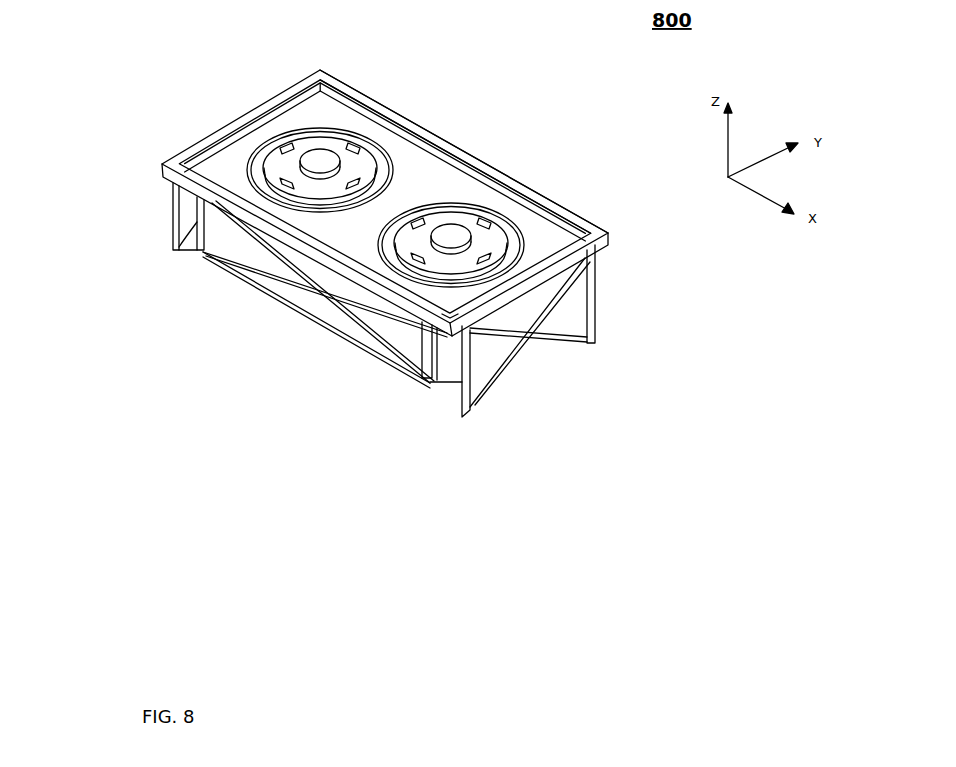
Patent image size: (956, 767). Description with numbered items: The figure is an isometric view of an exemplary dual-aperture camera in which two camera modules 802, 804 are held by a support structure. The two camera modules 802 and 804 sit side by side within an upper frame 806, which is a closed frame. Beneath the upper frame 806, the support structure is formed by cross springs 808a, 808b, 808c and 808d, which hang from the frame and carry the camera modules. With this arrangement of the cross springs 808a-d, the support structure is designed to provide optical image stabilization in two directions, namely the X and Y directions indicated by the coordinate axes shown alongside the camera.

The camera module 802 is at (377, 132).
The camera module 804 is at (503, 213).
The upper frame 806 is at (607, 238).
The cross spring 808a is at (325, 297).
The cross spring 808b is at (450, 156).
The cross spring 808c is at (528, 343).
The cross spring 808d is at (188, 195).